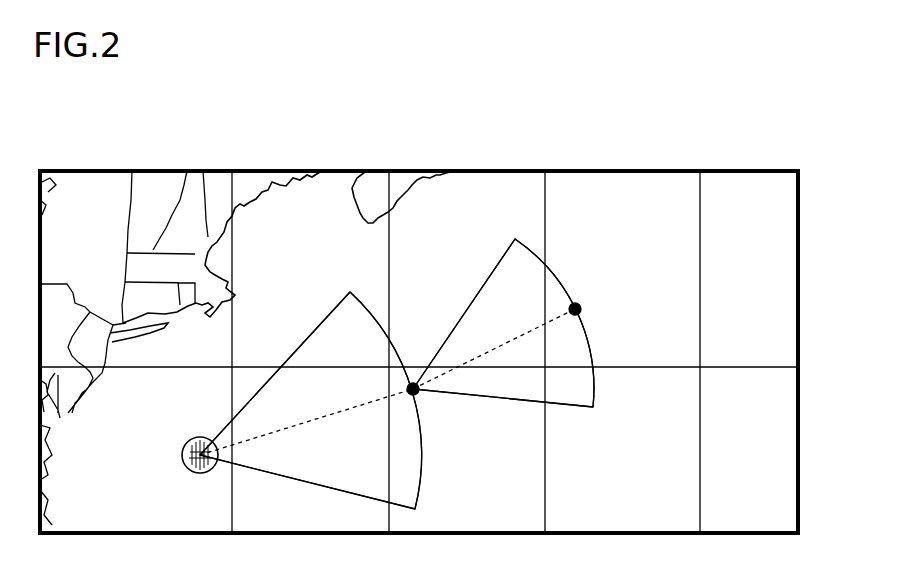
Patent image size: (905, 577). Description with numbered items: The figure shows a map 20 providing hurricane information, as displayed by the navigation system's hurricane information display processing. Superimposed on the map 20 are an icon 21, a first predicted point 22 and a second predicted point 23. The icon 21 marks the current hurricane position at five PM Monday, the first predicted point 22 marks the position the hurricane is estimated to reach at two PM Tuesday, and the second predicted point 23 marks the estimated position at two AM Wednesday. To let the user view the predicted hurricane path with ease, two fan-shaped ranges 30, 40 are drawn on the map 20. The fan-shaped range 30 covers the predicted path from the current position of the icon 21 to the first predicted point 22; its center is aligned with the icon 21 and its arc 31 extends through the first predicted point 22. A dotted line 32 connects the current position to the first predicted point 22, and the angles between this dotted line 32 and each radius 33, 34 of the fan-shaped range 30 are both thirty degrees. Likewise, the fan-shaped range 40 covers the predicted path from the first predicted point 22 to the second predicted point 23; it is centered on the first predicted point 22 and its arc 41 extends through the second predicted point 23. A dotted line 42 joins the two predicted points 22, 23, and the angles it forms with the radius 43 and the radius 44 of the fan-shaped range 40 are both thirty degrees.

The map 20 is at (776, 212).
The icon 21 is at (200, 473).
The first predicted point 22 is at (413, 384).
The second predicted point 23 is at (581, 308).
The fan-shaped range 30 is at (318, 308).
The arc 31 is at (423, 477).
The dotted line 32 is at (338, 412).
The radius 33 is at (303, 344).
The radius 34 is at (292, 481).
The fan-shaped range 40 is at (489, 259).
The arc 41 is at (593, 352).
The dotted line 42 is at (512, 340).
The radius 43 is at (482, 292).
The radius 44 is at (575, 407).